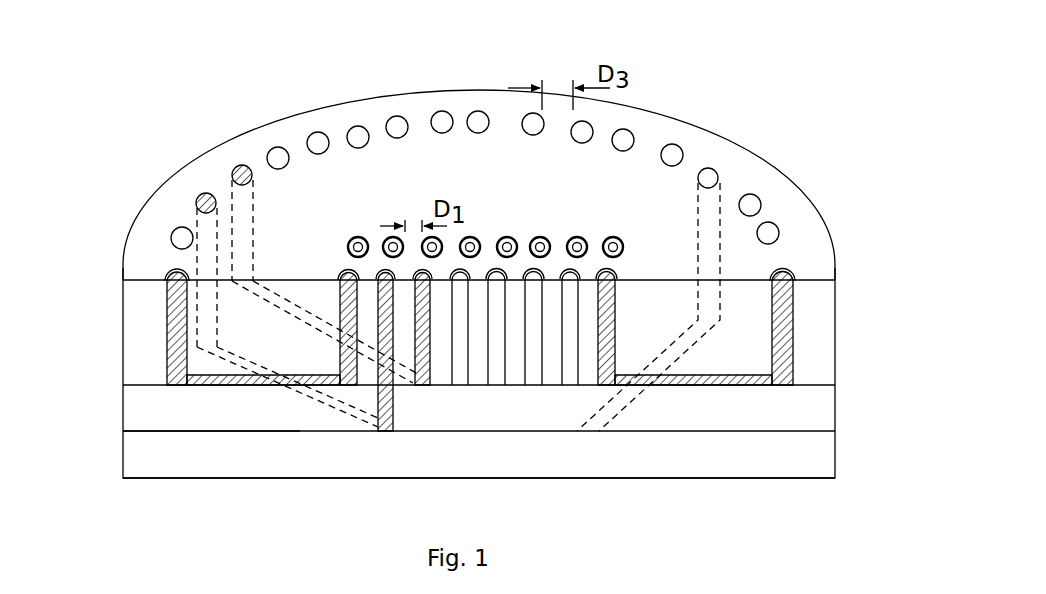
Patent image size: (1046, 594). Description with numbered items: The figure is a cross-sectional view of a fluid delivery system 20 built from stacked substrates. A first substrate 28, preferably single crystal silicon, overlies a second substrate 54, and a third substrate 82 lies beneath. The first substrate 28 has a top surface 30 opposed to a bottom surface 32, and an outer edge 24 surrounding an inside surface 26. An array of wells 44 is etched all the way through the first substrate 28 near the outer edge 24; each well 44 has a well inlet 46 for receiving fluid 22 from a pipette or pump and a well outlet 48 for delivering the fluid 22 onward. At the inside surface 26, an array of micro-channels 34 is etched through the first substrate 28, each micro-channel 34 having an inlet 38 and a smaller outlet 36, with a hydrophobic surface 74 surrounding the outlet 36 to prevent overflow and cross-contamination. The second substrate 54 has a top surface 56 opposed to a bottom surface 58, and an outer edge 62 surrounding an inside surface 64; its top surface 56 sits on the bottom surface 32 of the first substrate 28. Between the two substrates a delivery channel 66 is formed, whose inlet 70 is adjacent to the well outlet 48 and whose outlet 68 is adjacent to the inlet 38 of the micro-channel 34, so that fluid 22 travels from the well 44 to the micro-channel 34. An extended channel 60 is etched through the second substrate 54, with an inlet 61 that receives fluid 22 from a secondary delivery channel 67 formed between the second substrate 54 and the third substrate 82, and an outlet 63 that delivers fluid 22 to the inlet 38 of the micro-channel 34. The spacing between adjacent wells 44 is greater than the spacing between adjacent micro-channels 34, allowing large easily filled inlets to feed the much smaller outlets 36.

The fluid delivery system 20 is at (746, 70).
The fluid 22 is at (242, 165).
The outer edge 24 is at (752, 153).
The inside surface 26 is at (571, 209).
The first substrate 28 is at (820, 332).
The top surface 30 is at (810, 240).
The bottom surface 32 is at (818, 386).
The micro-channel 34 is at (342, 300).
The outlet 36 is at (359, 237).
The inlet 38 is at (458, 387).
The well 44 is at (440, 111).
The well inlet 46 is at (396, 116).
The well outlet 48 is at (258, 275).
The second substrate 54 is at (140, 405).
The top surface 56 is at (148, 383).
The bottom surface 58 is at (198, 432).
The extended channel 60 is at (570, 403).
The inlet 61 is at (577, 428).
The outer edge 62 is at (137, 383).
The outlet 63 is at (570, 385).
The inside surface 64 is at (478, 387).
The delivery channel 66 is at (303, 329).
The secondary delivery channel 67 is at (618, 395).
The outlet 68 is at (423, 387).
The inlet 70 is at (241, 275).
The hydrophobic surface 74 is at (471, 237).
The third substrate 82 is at (148, 453).